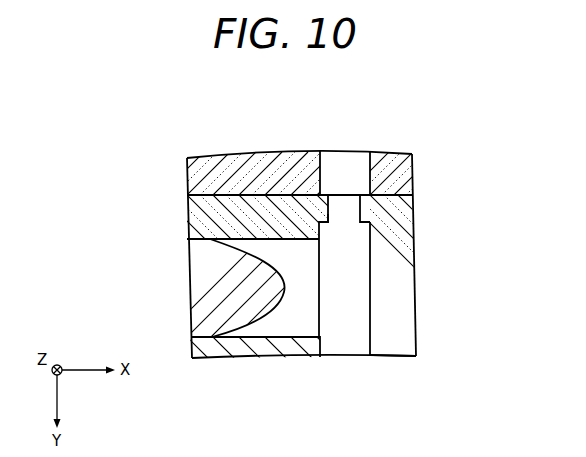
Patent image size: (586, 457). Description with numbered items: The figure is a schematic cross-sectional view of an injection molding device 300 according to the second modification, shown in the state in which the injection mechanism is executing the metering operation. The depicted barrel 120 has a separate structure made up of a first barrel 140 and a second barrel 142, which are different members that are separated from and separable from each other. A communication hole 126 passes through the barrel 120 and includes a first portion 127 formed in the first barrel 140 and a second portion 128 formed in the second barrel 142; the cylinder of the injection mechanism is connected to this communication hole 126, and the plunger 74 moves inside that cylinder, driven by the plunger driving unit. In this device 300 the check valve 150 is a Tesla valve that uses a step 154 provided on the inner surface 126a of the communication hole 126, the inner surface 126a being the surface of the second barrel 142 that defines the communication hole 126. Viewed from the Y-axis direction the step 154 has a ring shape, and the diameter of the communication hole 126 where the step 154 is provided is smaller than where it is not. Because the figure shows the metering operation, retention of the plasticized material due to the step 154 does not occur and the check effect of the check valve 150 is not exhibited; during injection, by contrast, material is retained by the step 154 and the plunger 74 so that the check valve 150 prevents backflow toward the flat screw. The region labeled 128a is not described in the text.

The injection molding device 300 is at (438, 127).
The barrel 120 is at (130, 227).
The first barrel 140 is at (218, 173).
The second barrel 142 is at (218, 222).
The check valve 150 is at (323, 212).
The step 154 is at (322, 208).
The plunger 74 is at (225, 292).
The second portion 128 is at (357, 253).
The opening of channel 128a is at (352, 187).
The first portion 127 is at (360, 173).
The communication hole 126 is at (484, 180).
The inner surface 126a is at (371, 318).